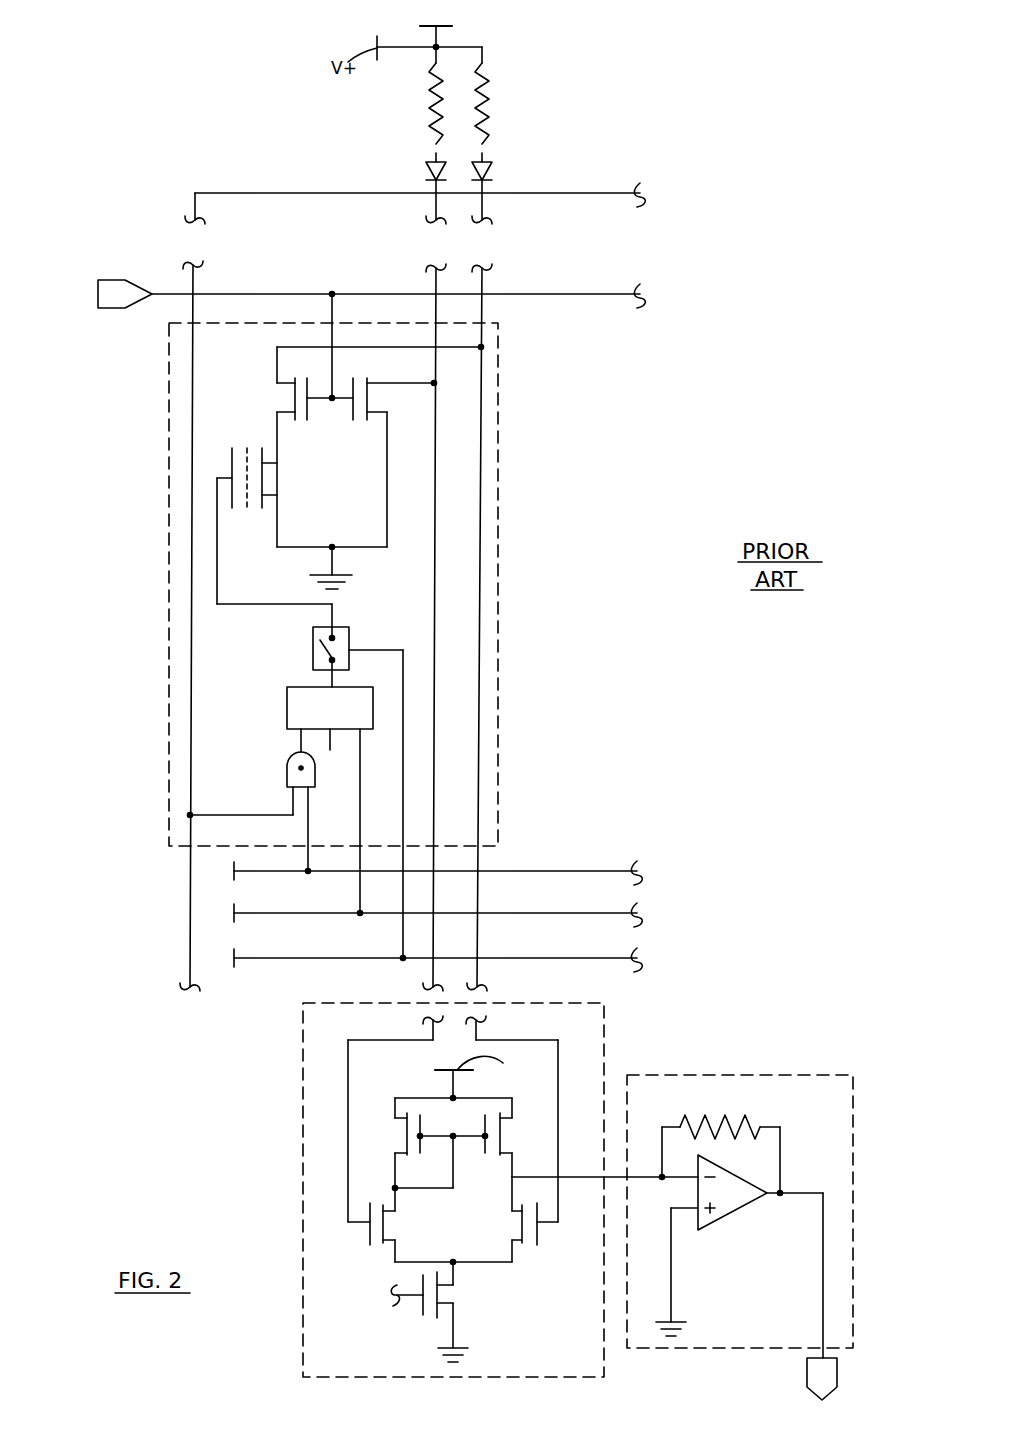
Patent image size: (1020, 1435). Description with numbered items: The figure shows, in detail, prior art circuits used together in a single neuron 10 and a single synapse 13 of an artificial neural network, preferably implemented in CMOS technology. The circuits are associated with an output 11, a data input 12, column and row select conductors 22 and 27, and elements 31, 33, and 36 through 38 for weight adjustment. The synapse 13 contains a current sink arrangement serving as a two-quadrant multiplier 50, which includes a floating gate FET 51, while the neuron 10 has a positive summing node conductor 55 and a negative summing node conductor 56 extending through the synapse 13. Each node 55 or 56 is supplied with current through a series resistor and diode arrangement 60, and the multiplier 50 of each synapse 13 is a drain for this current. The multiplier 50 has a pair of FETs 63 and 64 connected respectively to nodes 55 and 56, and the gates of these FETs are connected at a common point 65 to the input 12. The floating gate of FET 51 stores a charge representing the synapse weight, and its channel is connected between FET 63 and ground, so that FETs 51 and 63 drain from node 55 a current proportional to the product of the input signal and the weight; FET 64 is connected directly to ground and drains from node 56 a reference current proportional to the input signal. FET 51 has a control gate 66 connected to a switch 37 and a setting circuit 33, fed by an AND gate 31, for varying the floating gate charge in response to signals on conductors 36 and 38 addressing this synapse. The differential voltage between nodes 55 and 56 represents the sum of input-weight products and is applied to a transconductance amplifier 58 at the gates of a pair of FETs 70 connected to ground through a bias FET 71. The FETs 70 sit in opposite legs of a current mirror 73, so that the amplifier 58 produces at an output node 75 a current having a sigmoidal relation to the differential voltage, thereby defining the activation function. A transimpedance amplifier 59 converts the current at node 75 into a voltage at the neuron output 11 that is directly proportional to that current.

The neuron 10 is at (312, 180).
The output 11 is at (807, 1372).
The data input 12 is at (118, 308).
The synapse 13 is at (169, 450).
The column select conductor 22 is at (196, 282).
The row select conductor 27 is at (597, 870).
The weight adjustment element 31 is at (287, 773).
The setting circuit 33 is at (287, 703).
The conductor 36 is at (590, 912).
The switch 37 is at (313, 652).
The conductor 38 is at (583, 957).
The two-quadrant multiplier 50 is at (342, 466).
The floating gate FET 51 is at (247, 514).
The positive summing node conductor 55 is at (478, 969).
The negative summing node conductor 56 is at (432, 968).
The transconductance amplifier 58 is at (489, 1182).
The transimpedance amplifier 59 is at (722, 1075).
The series resistor and diode arrangement 60 is at (440, 110).
The FET 63 is at (320, 414).
The FET 64 is at (352, 418).
The common point 65 is at (333, 396).
The control gate 66 is at (217, 477).
The pair of FETs 70 is at (501, 1222).
The bias FET 71 is at (421, 1311).
The current mirror 73 is at (386, 1131).
The output node 75 is at (604, 1178).